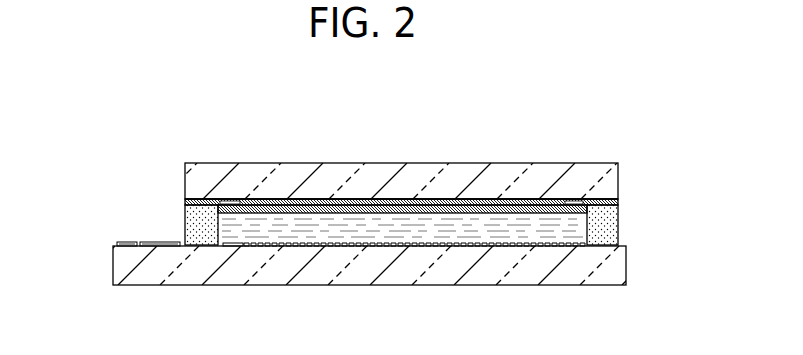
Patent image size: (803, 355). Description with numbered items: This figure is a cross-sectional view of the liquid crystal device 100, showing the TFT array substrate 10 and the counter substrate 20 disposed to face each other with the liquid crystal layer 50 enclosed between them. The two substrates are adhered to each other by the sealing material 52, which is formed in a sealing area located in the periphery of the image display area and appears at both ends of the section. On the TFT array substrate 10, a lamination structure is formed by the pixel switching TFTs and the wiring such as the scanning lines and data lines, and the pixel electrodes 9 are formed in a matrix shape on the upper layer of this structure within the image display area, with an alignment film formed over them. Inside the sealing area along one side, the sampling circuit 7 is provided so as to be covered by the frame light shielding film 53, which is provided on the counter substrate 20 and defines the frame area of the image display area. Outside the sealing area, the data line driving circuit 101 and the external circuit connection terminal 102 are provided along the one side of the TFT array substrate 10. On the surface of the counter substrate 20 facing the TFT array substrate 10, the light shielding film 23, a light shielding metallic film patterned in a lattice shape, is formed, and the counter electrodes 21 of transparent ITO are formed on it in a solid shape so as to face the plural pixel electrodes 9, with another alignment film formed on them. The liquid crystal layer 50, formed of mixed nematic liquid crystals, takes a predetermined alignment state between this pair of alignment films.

The liquid crystal device 100 is at (594, 66).
The TFT array substrate 10 is at (433, 267).
The sampling circuit 7 is at (230, 248).
The pixel electrodes 9 is at (263, 247).
The liquid crystal layer 50 is at (352, 228).
The counter substrate 20 is at (305, 173).
The counter electrodes 21 is at (517, 193).
The light shielding film 23 is at (393, 200).
The sealing material 52 is at (193, 225).
The frame light shielding film 53 is at (228, 200).
The data line driving circuit 101 is at (165, 242).
The external circuit connection terminal 102 is at (120, 244).